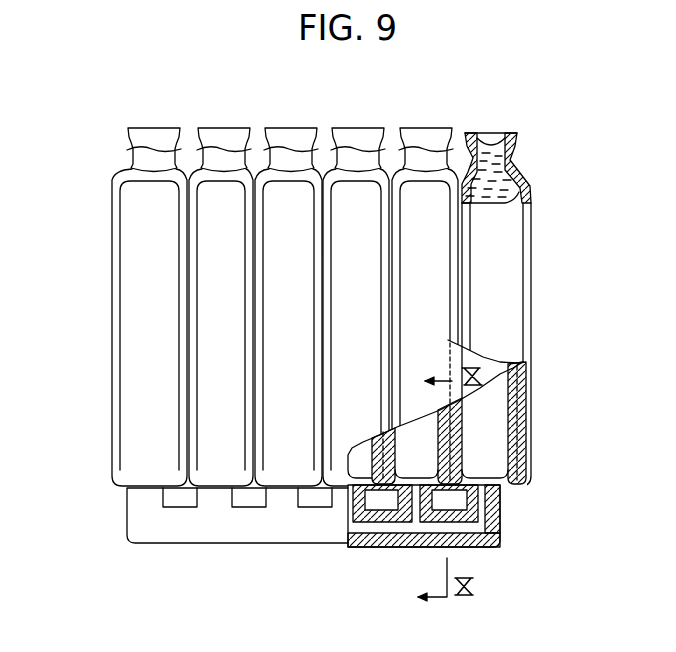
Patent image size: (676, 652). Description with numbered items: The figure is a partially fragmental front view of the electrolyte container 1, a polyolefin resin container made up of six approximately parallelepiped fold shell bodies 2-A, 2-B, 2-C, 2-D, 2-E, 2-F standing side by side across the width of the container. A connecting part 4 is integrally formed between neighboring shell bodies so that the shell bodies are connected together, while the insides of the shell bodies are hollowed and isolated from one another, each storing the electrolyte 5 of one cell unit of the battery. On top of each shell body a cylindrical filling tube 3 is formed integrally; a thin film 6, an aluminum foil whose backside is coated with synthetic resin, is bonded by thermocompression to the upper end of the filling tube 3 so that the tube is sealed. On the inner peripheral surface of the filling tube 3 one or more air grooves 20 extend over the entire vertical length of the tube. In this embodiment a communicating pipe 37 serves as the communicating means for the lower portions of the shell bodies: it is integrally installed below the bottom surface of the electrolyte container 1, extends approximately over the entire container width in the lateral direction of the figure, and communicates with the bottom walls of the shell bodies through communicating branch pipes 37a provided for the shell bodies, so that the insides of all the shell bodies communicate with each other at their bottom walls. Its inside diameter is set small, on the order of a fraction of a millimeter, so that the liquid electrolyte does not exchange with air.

The electrolyte container 1 is at (106, 322).
The shell body 2-A is at (497, 332).
The shell body 2-B is at (450, 336).
The shell body 2-C is at (380, 336).
The shell body 2-D is at (311, 336).
The shell body 2-E is at (243, 336).
The shell body 2-F is at (172, 336).
The filling tube 3 is at (511, 162).
The connecting part 4 is at (514, 364).
The electrolyte 5 is at (503, 197).
The thin film 6 is at (152, 128).
The air groove 20 is at (468, 162).
The communicating pipe 37 is at (321, 535).
The communicating branch pipe 37a is at (494, 506).